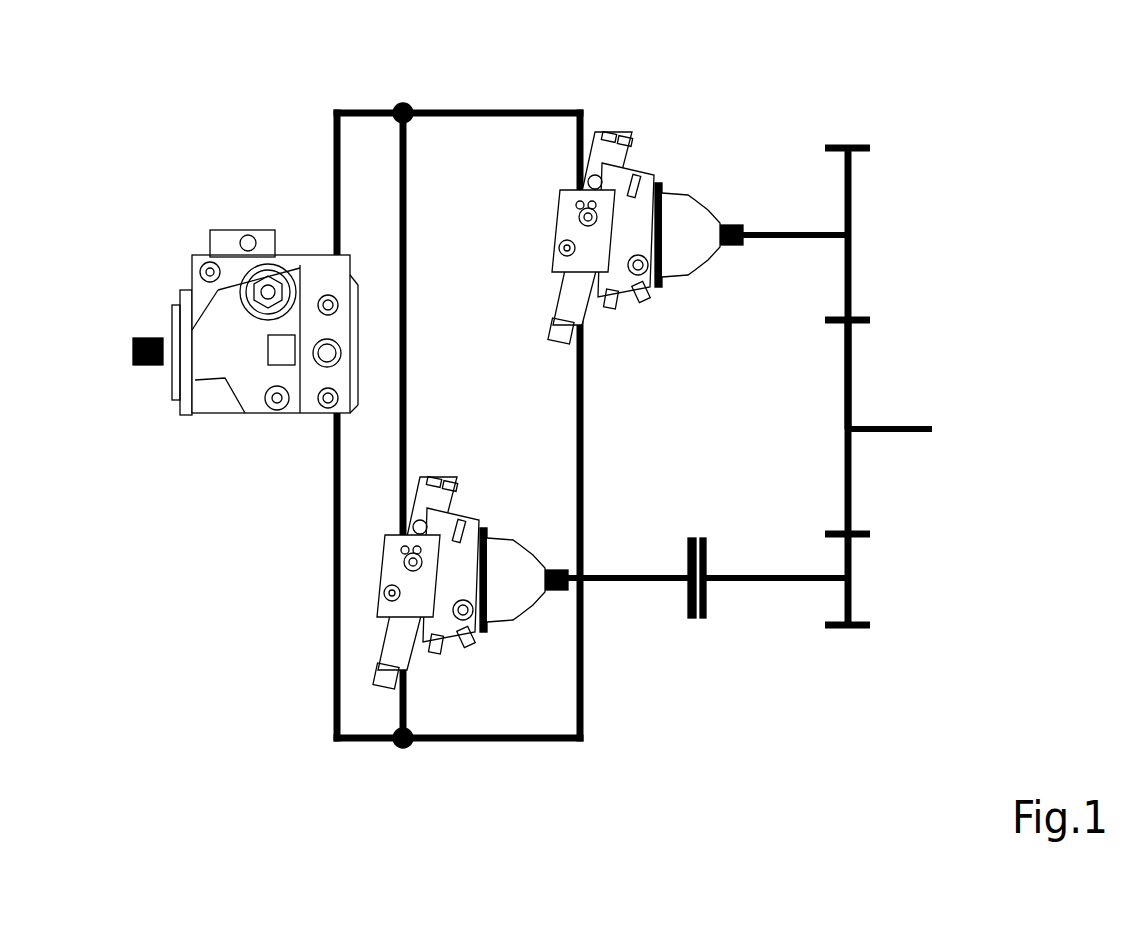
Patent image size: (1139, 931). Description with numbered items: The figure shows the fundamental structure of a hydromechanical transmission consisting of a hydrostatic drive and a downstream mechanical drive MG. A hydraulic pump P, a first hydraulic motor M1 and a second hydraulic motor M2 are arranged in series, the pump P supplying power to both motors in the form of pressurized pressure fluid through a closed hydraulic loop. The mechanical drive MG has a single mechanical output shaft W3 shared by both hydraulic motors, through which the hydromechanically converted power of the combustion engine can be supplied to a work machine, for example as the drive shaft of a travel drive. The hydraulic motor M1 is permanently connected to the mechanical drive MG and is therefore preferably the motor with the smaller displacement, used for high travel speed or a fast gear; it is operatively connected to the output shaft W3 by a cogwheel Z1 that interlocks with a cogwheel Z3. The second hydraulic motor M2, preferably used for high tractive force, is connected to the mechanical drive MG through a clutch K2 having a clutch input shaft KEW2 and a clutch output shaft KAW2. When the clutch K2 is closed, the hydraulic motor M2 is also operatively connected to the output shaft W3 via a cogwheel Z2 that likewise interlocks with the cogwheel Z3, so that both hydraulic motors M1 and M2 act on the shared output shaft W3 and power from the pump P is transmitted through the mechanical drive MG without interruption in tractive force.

The hydraulic pump P is at (238, 345).
The hydraulic motor M1 is at (692, 228).
The hydraulic motor M2 is at (507, 582).
The mechanical drive MG is at (851, 127).
The cogwheel Z1 is at (850, 193).
The cogwheel Z2 is at (850, 560).
The cogwheel Z3 is at (852, 373).
The mechanical output shaft W3 is at (903, 433).
The clutch input shaft KEW2 is at (603, 575).
The clutch output shaft KAW2 is at (790, 576).
The clutch K2 is at (707, 597).